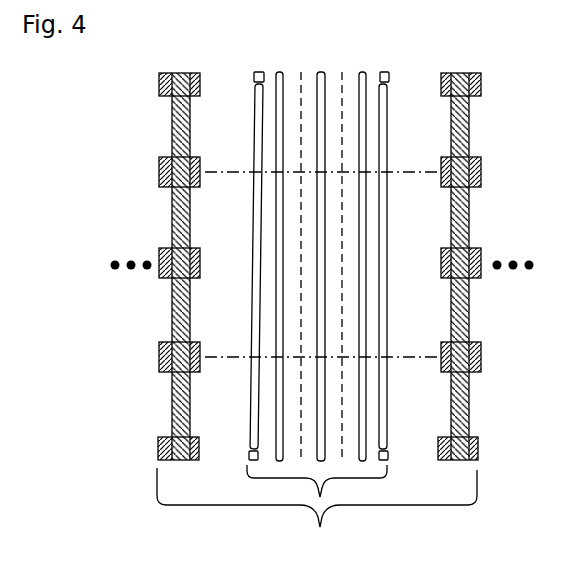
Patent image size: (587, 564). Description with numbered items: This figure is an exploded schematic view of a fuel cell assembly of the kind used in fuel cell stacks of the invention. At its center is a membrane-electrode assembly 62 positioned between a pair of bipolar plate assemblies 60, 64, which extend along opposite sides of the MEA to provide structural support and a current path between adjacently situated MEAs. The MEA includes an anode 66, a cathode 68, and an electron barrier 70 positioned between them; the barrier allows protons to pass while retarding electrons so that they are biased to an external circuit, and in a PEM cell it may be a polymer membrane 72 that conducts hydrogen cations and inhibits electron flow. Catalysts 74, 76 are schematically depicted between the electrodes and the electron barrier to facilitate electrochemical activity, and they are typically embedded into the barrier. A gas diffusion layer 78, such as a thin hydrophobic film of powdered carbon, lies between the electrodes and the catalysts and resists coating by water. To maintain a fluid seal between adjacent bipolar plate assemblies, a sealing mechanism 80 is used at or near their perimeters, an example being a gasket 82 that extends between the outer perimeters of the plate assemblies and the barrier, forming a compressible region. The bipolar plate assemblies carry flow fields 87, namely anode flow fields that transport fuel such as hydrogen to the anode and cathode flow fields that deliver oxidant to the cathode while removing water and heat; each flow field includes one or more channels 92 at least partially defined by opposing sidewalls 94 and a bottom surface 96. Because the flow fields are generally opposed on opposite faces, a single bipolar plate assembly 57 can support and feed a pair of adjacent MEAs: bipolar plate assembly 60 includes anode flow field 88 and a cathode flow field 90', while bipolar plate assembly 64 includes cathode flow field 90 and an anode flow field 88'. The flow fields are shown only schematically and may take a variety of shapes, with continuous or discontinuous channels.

The bipolar plate assembly 57 is at (126, 79).
The bipolar plate assembly 60 is at (157, 85).
The bipolar plate assembly 64 is at (485, 87).
The membrane-electrode assembly 62 is at (323, 496).
The anode 66 is at (253, 90).
The cathode 68 is at (388, 95).
The electron barrier 70 is at (322, 72).
The polymer membrane 72 is at (322, 313).
The catalyst 74 is at (292, 362).
The catalyst 76 is at (342, 245).
The gas diffusion layer 78 is at (256, 71).
The sealing mechanism 80 is at (390, 66).
The gasket 82 is at (380, 76).
The flow fields 87 is at (429, 425).
The anode flow field 88 is at (206, 125).
The anode flow field 88' is at (467, 137).
The cathode flow field 90 is at (434, 132).
The cathode flow field 90' is at (177, 138).
The channels 92 is at (200, 229).
The sidewalls 94 is at (200, 183).
The bottom surface 96 is at (191, 240).